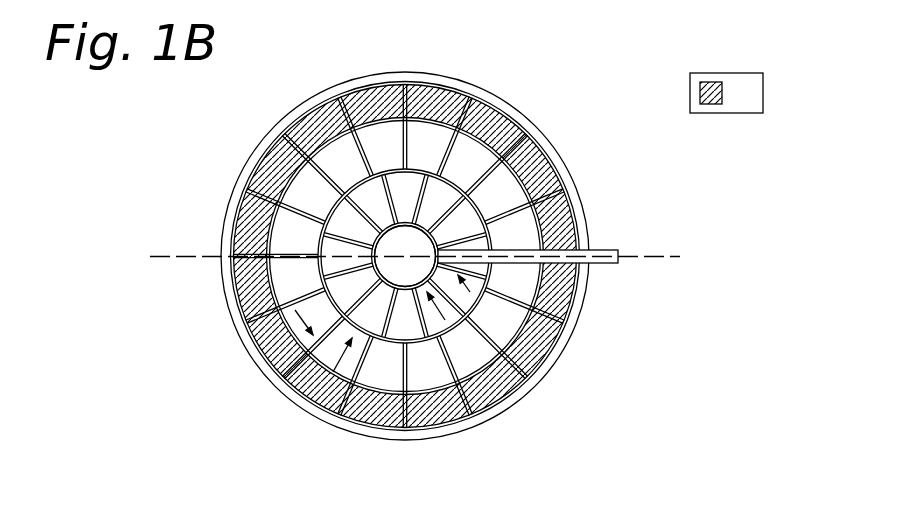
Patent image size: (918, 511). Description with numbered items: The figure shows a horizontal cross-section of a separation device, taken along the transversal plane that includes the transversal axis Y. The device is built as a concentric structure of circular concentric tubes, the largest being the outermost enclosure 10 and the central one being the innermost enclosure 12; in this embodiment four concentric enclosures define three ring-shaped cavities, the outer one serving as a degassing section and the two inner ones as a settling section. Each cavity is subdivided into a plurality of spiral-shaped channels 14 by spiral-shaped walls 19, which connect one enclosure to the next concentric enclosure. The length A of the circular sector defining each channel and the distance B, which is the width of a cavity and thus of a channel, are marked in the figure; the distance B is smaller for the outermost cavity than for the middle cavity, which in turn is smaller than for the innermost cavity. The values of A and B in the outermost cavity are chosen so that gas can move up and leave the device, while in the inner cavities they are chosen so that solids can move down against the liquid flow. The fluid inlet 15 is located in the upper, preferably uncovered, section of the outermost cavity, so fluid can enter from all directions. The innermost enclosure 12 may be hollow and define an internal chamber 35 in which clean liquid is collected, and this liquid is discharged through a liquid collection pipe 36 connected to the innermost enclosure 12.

The outermost enclosure 10 is at (533, 392).
The innermost enclosure 12 is at (373, 268).
The spiral-shaped channels 14 is at (465, 353).
The fluid inlet 15 is at (726, 93).
The spiral-shaped walls 19 is at (297, 202).
The internal chamber 35 is at (393, 252).
The liquid collection pipe 36 is at (620, 230).
The length of a circular sector A is at (505, 115).
The width of a concentric cavity B is at (530, 177).
The transversal axis Y is at (667, 257).